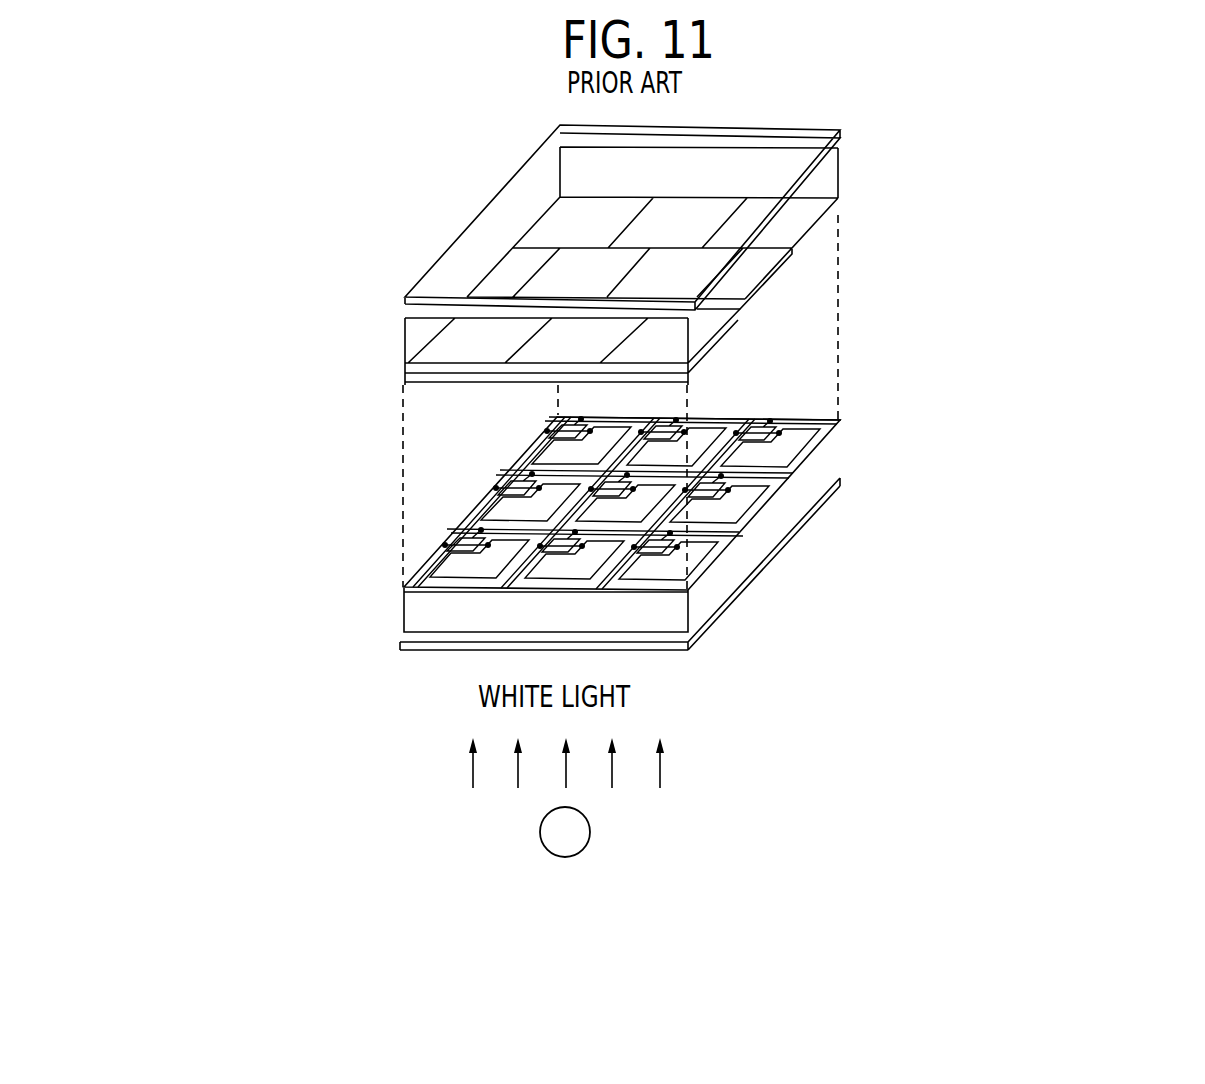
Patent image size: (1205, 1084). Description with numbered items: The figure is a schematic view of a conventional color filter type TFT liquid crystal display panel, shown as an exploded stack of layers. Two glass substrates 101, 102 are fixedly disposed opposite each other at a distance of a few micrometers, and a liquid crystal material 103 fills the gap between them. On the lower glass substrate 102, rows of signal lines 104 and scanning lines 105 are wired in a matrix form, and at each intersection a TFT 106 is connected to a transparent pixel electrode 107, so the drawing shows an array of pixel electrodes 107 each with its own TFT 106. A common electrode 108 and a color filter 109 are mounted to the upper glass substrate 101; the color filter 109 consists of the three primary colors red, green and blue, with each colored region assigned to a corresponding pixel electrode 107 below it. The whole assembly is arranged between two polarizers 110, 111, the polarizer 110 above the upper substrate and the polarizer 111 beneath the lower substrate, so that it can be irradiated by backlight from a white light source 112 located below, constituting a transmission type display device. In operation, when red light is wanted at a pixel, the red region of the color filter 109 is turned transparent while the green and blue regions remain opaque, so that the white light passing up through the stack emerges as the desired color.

The glass substrate 101 is at (417, 342).
The glass substrate 102 is at (418, 612).
The liquid crystal material 103 is at (798, 368).
The signal line 104 is at (745, 473).
The scanning line 105 is at (780, 482).
The TFT 106 is at (650, 548).
The pixel electrode 107 is at (690, 553).
The common electrode 108 is at (840, 206).
The color filter 109 is at (840, 206).
The polarizer 110 is at (405, 297).
The polarizer 111 is at (403, 650).
The white light source 112 is at (578, 840).